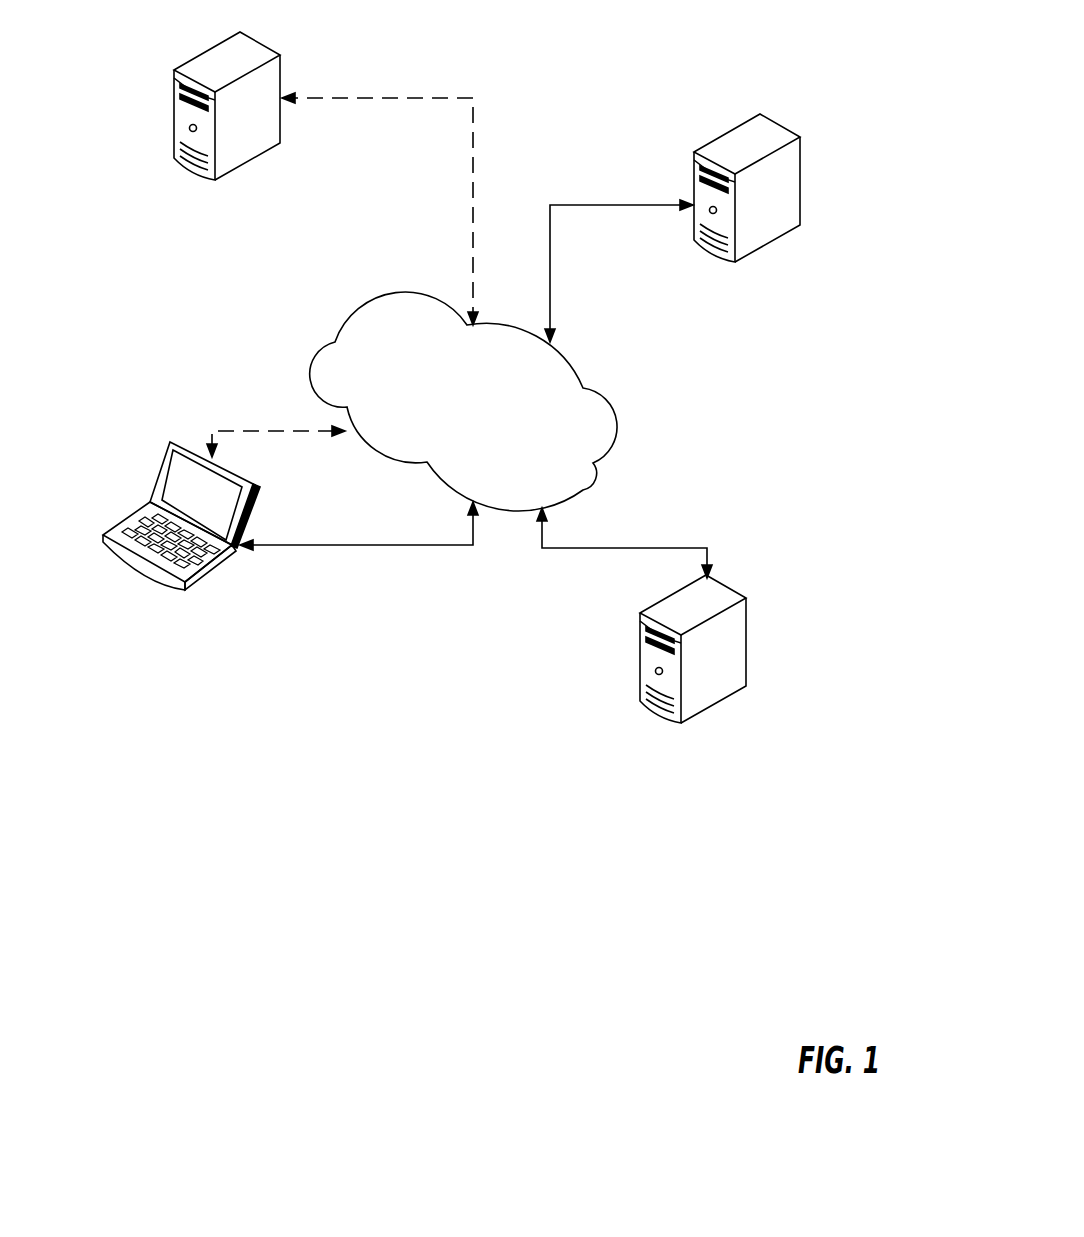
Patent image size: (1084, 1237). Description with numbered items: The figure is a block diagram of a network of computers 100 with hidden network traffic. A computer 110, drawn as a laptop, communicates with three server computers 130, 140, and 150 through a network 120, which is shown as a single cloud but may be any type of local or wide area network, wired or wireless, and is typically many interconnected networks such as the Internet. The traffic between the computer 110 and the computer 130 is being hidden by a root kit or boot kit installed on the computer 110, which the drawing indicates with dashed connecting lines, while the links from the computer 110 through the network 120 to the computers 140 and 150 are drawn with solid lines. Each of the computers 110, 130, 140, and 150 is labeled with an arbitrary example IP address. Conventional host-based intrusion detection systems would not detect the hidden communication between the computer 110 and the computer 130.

The network system 100 is at (568, 58).
The computer 110 is at (183, 585).
The network 120 is at (463, 401).
The computer 130 is at (282, 62).
The computer 140 is at (798, 137).
The computer 150 is at (748, 648).